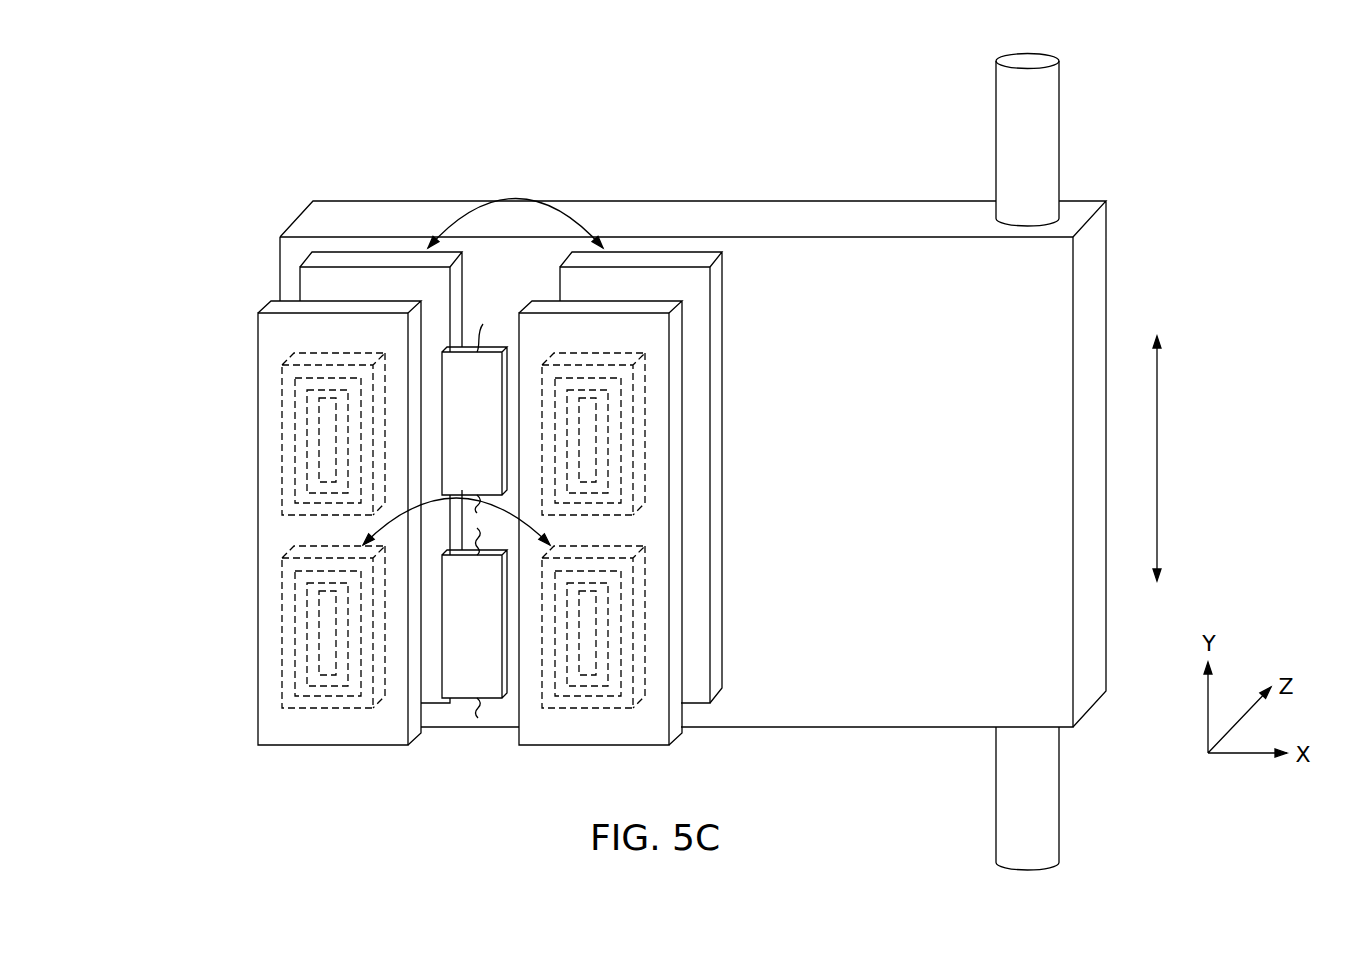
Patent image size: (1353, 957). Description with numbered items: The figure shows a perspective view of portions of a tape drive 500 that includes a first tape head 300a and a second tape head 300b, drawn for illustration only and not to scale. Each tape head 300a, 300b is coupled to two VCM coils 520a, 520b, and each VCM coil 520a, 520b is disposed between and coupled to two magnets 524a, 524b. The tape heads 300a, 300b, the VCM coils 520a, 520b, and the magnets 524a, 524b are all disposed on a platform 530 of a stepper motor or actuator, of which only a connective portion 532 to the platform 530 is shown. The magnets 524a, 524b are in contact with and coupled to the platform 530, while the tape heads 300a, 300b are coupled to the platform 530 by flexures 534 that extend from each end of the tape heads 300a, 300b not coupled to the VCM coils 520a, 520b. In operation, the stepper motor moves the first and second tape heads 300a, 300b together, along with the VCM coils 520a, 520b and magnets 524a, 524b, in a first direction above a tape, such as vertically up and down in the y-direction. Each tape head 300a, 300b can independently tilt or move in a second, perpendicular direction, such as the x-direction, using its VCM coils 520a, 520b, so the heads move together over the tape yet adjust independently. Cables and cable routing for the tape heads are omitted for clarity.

The tape drive 500 is at (222, 292).
The connective portion 532 is at (1124, 186).
The platform 530 is at (967, 479).
The magnet 524a is at (312, 342).
The magnet 524b is at (352, 295).
The VCM coil 520a is at (281, 443).
The VCM coil 520b is at (634, 457).
The first tape head 300a is at (498, 435).
The second tape head 300b is at (498, 640).
The flexure 534 is at (483, 324).